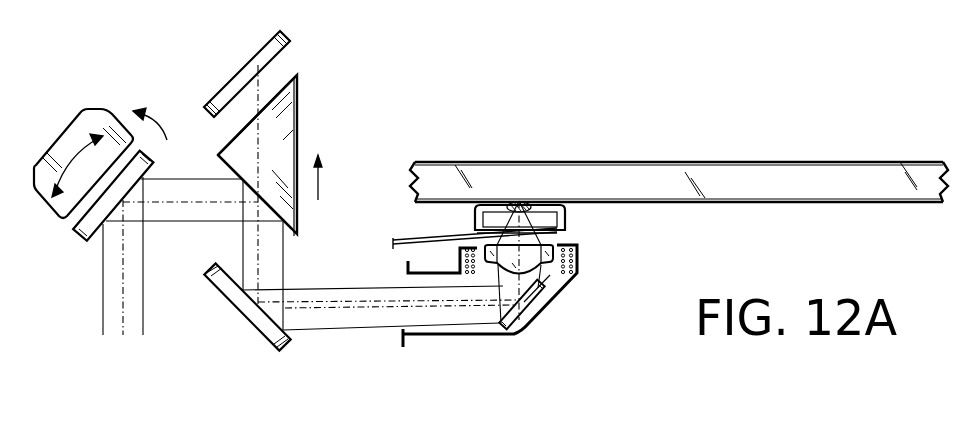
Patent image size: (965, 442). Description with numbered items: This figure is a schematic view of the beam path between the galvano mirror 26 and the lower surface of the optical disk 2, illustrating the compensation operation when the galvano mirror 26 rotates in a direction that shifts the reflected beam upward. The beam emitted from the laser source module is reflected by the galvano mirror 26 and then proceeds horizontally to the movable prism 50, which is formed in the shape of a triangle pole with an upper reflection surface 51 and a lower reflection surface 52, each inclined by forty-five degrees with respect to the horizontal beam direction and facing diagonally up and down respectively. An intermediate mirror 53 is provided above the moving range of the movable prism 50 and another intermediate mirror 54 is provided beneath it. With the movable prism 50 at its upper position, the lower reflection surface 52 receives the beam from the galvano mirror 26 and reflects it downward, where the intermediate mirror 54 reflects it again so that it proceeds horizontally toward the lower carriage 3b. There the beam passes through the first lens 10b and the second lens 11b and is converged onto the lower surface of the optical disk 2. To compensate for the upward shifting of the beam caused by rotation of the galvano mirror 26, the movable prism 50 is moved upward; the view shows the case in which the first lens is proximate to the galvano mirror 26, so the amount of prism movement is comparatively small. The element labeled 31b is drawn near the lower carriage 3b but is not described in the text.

The optical disk 2 is at (710, 170).
The second carriage 3b is at (491, 356).
The first lens 10b is at (545, 272).
The second lens 11b is at (530, 215).
The galvano mirror 26 is at (77, 234).
The rising mirror 31b is at (526, 334).
The movable prism 50 is at (290, 132).
The upper reflection surface 51 is at (288, 72).
The lower reflection surface 52 is at (290, 240).
The intermediate mirror 53 is at (258, 53).
The intermediate mirror 54 is at (233, 295).